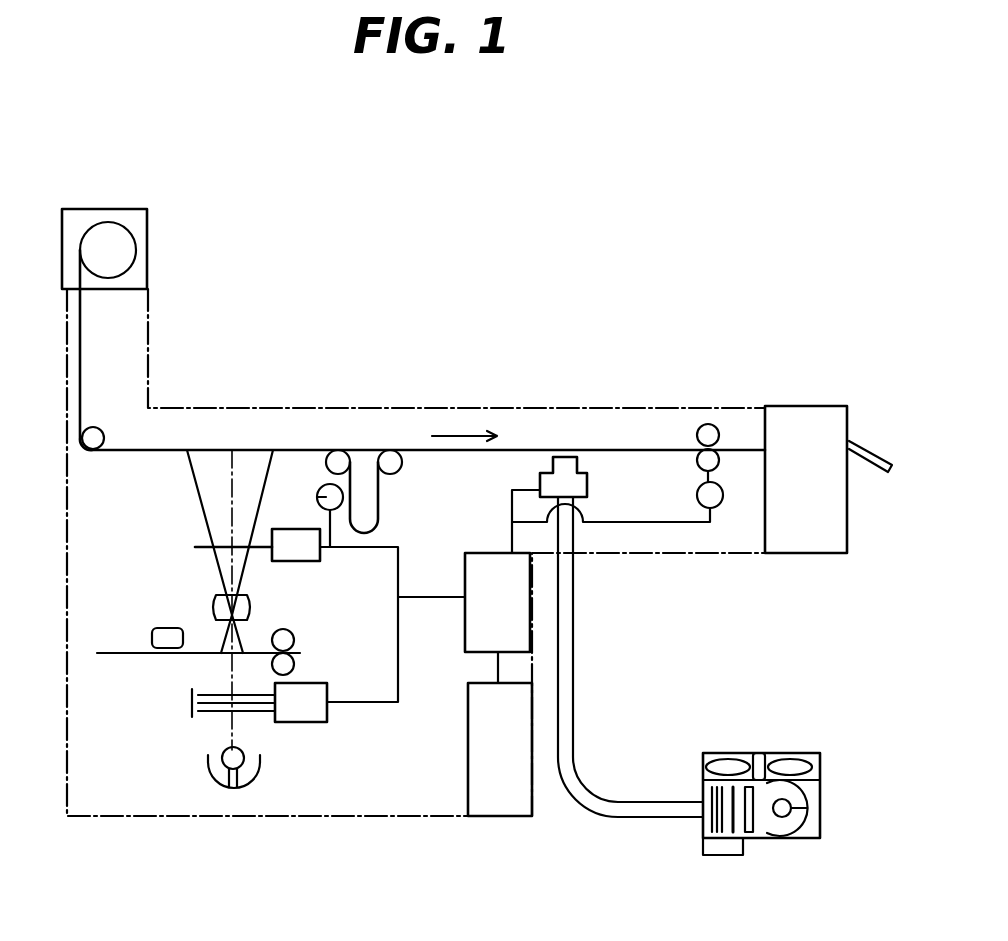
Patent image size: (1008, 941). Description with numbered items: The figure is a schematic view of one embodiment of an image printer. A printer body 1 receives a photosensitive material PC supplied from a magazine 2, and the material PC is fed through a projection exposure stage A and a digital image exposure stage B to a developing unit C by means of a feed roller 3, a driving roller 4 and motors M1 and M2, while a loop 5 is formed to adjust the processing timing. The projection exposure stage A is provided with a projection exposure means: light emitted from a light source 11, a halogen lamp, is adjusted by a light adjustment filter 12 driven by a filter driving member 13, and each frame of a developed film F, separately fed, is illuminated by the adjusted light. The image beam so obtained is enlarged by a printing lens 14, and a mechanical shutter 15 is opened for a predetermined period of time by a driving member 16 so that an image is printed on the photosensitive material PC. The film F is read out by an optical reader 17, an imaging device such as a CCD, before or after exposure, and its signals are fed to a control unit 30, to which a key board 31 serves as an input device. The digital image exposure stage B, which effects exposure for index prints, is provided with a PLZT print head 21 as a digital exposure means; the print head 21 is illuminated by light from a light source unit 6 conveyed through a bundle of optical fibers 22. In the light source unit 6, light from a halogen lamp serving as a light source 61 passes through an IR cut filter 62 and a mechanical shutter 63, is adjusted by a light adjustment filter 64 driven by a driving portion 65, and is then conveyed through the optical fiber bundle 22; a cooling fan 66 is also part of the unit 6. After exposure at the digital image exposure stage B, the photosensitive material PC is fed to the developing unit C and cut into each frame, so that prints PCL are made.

The printer body 1 is at (65, 547).
The magazine 2 is at (147, 240).
The feed roller 3 is at (96, 428).
The driving roller 4 is at (338, 448).
The loop 5 is at (380, 498).
The light source unit 6 is at (836, 741).
The light source 11 is at (208, 766).
The light adjustment filter 12 is at (185, 702).
The filter driving member 13 is at (312, 690).
The printing lens 14 is at (213, 604).
The mechanical shutter 15 is at (200, 545).
The driving member 16 is at (308, 561).
The optical reader 17 is at (157, 630).
The PLZT print head 21 is at (550, 468).
The bundle of optical fibers 22 is at (576, 594).
The control unit 30 is at (472, 627).
The key board 31 is at (475, 747).
The light source 61 is at (805, 822).
The IR cut filter 62 is at (758, 828).
The mechanical shutter 63 is at (748, 833).
The light adjustment filter 64 is at (712, 815).
The driving portion 65 is at (716, 855).
The cooling fan 66 is at (762, 752).
The projection exposure stage A is at (238, 429).
The digital image exposure stage B is at (572, 432).
The developing unit C is at (797, 393).
The photosensitive material PC is at (418, 447).
The prints PCL is at (872, 440).
The developed film F is at (122, 651).
The motor M1 is at (310, 515).
The motor M2 is at (700, 494).